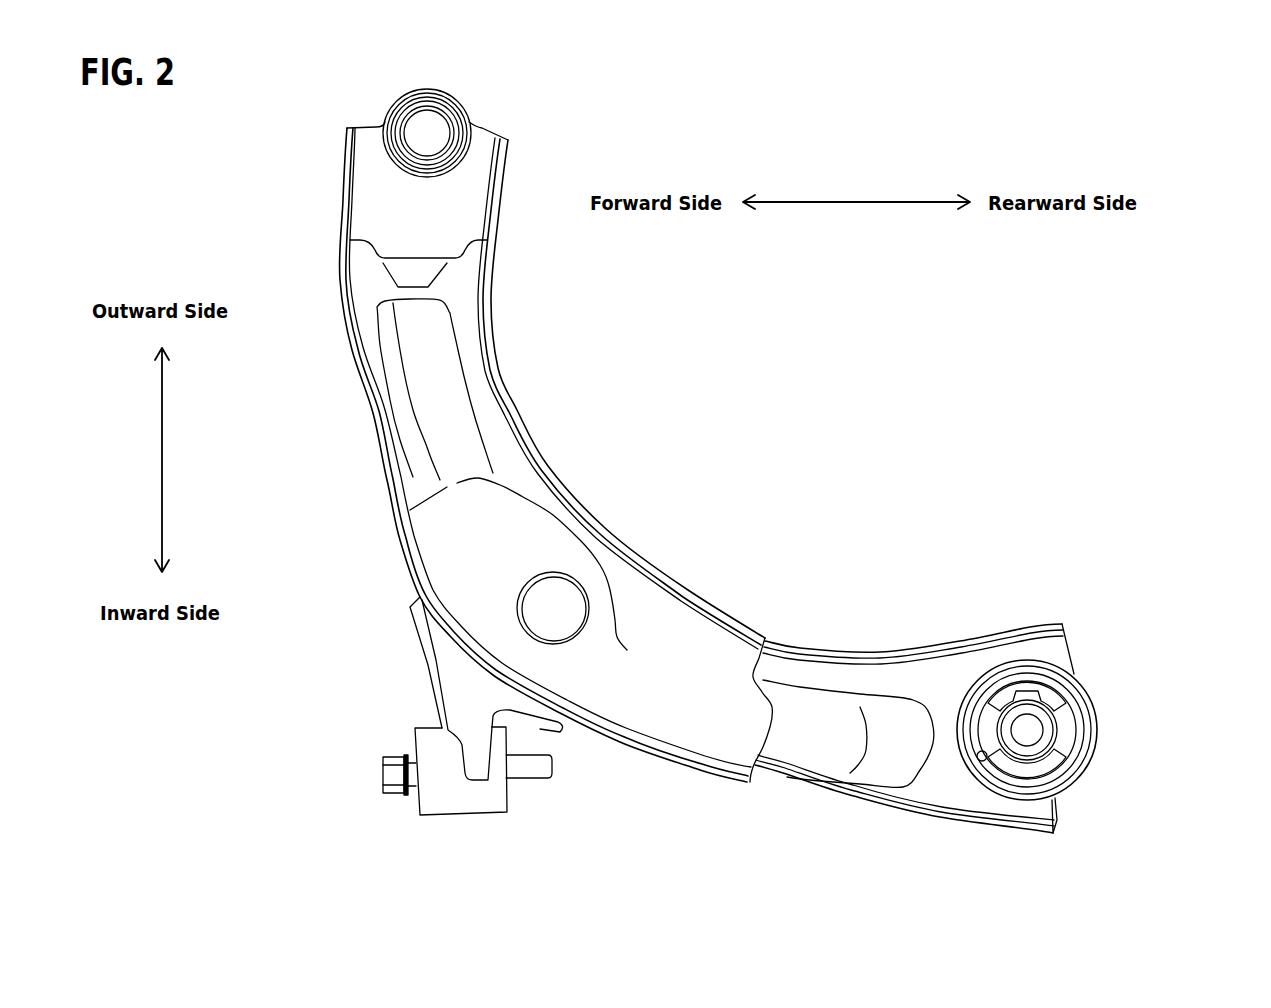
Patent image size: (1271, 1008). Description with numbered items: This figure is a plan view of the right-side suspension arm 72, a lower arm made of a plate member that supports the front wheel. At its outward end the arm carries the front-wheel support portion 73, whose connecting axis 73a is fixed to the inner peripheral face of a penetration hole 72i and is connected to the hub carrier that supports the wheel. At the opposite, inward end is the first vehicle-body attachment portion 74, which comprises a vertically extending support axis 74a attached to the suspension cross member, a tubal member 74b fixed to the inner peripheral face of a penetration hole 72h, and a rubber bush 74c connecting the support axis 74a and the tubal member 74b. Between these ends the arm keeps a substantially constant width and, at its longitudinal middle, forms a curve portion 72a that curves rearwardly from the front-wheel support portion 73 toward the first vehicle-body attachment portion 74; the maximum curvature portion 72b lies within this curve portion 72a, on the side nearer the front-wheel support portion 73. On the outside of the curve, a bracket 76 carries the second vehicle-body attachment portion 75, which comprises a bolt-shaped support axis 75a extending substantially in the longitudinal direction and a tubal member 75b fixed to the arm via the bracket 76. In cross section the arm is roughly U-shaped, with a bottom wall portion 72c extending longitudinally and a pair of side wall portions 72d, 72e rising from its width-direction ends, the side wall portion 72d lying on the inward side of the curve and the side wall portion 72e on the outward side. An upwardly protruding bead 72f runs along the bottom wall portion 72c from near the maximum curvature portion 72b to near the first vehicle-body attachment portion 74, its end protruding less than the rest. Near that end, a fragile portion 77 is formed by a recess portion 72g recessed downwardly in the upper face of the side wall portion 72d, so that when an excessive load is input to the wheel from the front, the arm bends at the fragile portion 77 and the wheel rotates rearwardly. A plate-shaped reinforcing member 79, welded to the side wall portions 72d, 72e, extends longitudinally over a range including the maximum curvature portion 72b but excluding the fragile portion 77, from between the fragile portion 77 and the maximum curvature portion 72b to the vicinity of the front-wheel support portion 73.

The suspension arm 72 is at (537, 345).
The curve portion 72a is at (733, 598).
The maximum curvature portion 72b is at (545, 447).
The bottom wall portion 72c is at (800, 668).
The side wall portion 72d is at (872, 653).
The side wall portion 72e is at (852, 808).
The bead 72f is at (782, 745).
The recess portion 72g is at (910, 655).
The fragile portion 77 is at (913, 641).
The penetration hole 72h is at (990, 763).
The penetration hole 72i is at (412, 122).
The front-wheel support portion 73 is at (427, 133).
The connecting axis 73a is at (437, 120).
The first vehicle-body attachment portion 74 is at (1223, 478).
The support axis 74a is at (1037, 710).
The tubal member 74b is at (1025, 670).
The rubber bush 74c is at (1058, 742).
The second vehicle-body attachment portion 75 is at (403, 727).
The bolt-shaped support axis 75a is at (395, 797).
The tubal member 75b is at (468, 795).
The bracket 76 is at (460, 680).
The reinforcing member 79 is at (653, 727).